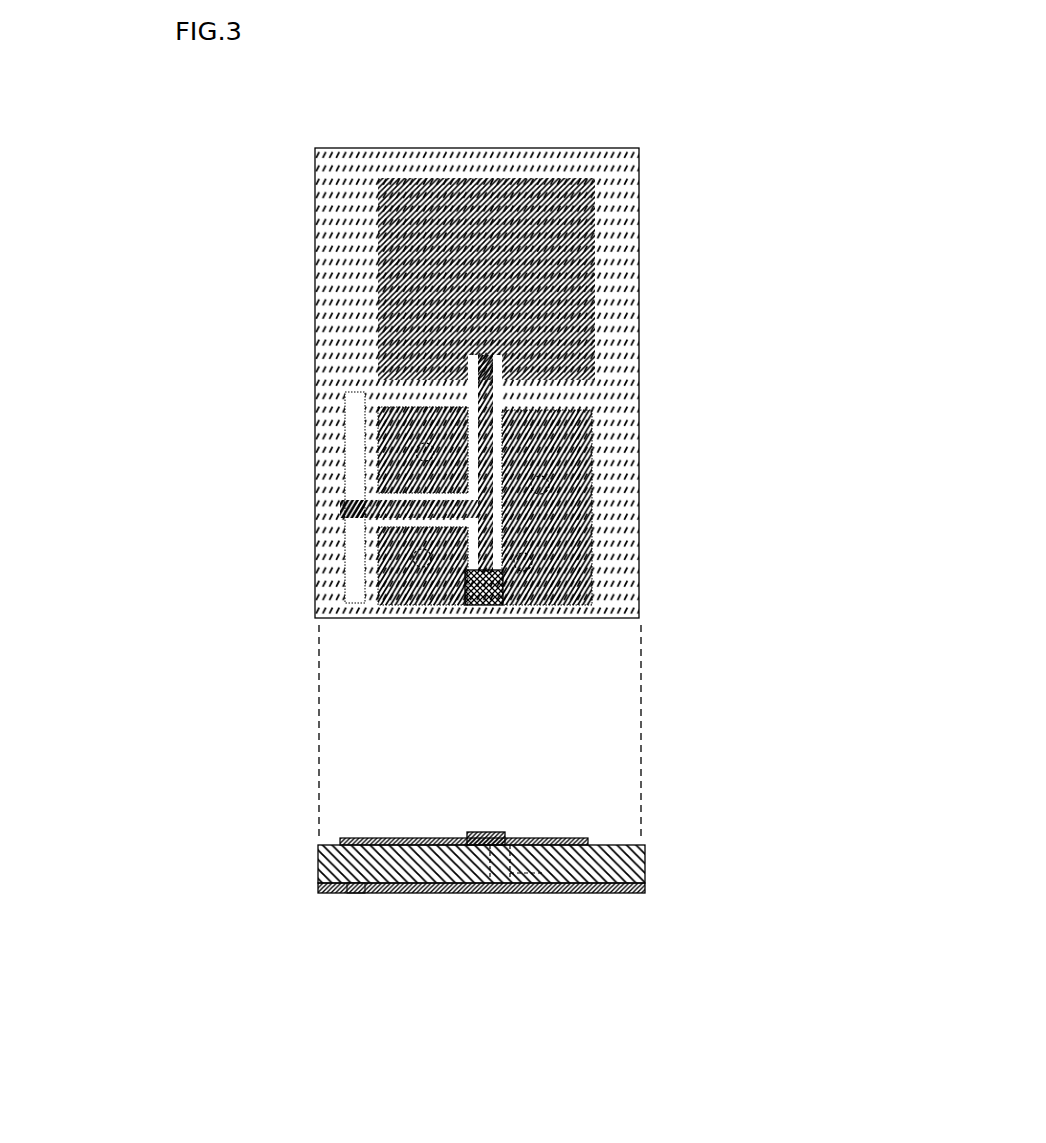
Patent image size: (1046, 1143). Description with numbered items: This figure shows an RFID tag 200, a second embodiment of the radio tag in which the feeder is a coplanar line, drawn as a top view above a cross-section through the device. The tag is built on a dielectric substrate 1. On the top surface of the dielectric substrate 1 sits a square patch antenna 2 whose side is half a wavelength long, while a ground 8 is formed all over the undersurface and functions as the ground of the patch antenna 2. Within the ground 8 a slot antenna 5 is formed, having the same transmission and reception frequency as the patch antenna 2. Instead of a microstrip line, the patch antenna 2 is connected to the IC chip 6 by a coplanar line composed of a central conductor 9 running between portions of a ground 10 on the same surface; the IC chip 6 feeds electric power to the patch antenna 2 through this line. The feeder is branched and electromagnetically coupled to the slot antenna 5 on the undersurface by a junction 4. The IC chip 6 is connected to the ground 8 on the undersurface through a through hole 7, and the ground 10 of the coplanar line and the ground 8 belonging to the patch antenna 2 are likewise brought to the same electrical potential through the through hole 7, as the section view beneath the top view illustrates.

The RFID tag 200 is at (336, 487).
The dielectric substrate 1 is at (318, 868).
The patch antenna 2 is at (378, 268).
The junction 4 is at (342, 505).
The slot antenna 5 is at (346, 572).
The IC chip 6 is at (503, 576).
The through hole 7 is at (570, 606).
The ground 8 is at (632, 372).
The central conductor 9 is at (488, 452).
The ground 10 is at (512, 435).